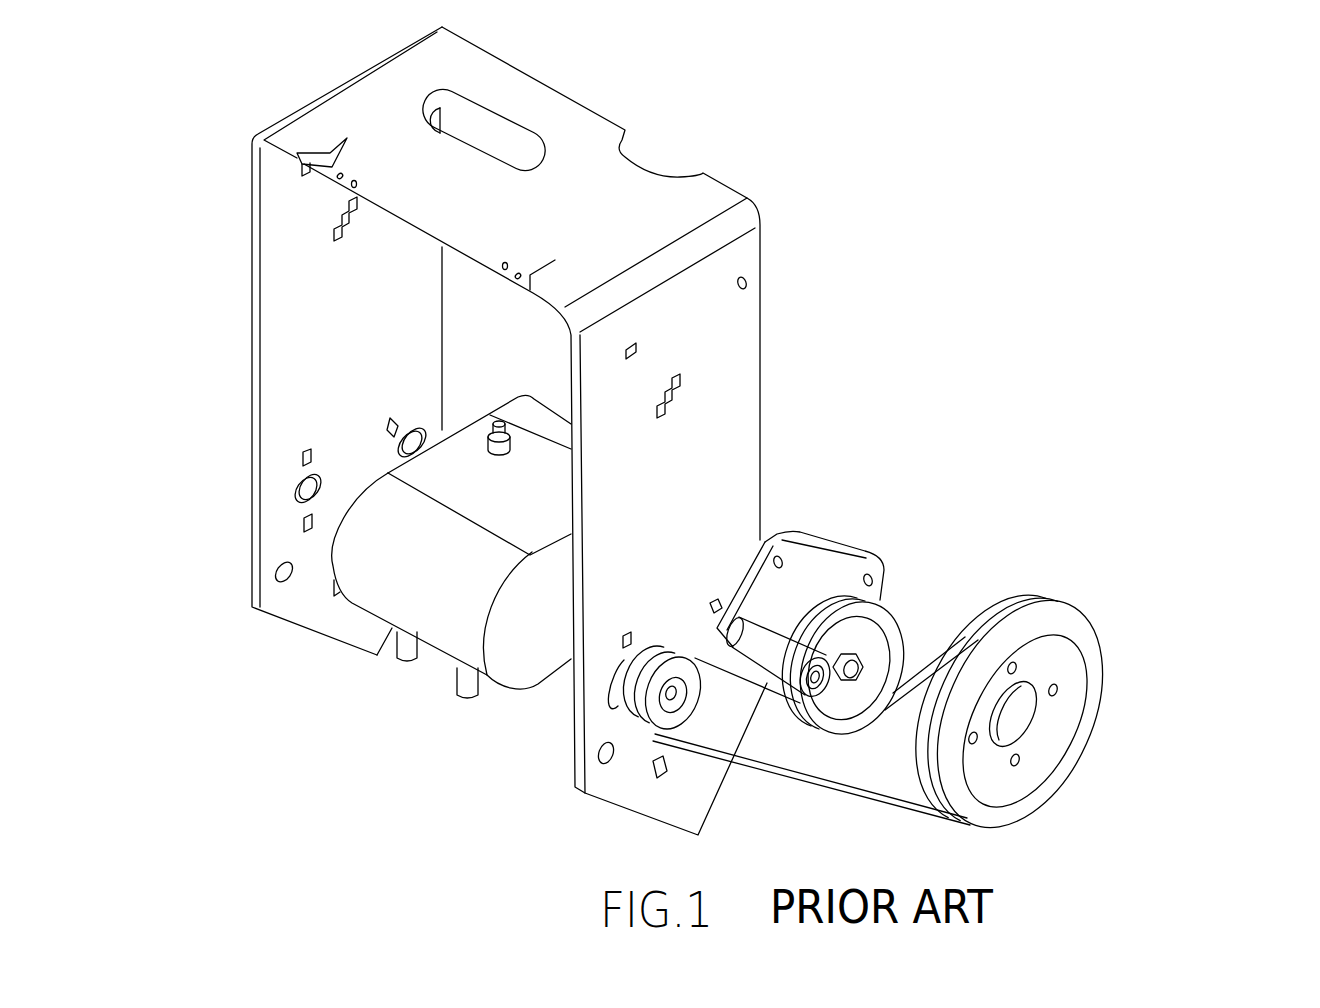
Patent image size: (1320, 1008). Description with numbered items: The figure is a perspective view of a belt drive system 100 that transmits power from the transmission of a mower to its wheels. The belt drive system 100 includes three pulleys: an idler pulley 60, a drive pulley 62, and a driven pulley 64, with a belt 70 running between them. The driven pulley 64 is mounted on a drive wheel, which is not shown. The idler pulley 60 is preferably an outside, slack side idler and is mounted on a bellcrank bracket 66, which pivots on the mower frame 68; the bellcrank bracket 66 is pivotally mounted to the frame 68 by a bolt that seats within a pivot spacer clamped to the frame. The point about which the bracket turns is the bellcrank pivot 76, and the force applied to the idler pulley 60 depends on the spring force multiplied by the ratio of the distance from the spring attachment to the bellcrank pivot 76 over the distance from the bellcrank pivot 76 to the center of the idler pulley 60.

The belt drive system 100 is at (1090, 166).
The mower frame 68 is at (447, 55).
The drive pulley 62 is at (660, 733).
The driven pulley 64 is at (1098, 707).
The idler pulley 60 is at (875, 648).
The bellcrank bracket 66 is at (807, 560).
The bellcrank pivot 76 is at (721, 612).
The belt 70 is at (838, 783).